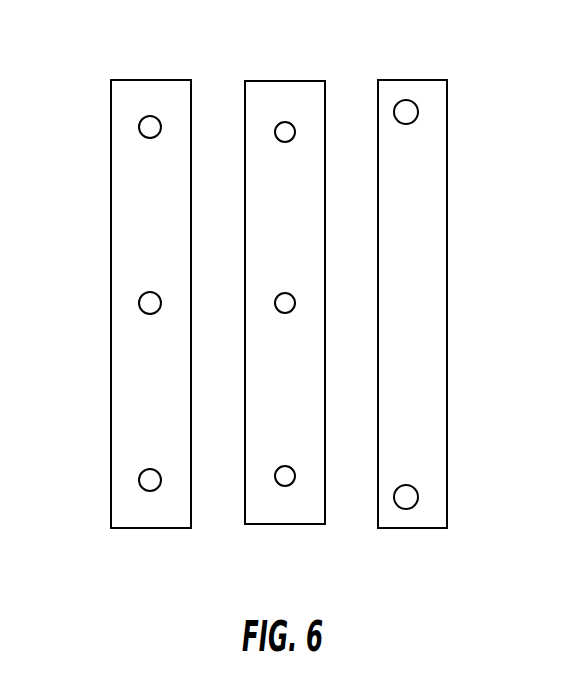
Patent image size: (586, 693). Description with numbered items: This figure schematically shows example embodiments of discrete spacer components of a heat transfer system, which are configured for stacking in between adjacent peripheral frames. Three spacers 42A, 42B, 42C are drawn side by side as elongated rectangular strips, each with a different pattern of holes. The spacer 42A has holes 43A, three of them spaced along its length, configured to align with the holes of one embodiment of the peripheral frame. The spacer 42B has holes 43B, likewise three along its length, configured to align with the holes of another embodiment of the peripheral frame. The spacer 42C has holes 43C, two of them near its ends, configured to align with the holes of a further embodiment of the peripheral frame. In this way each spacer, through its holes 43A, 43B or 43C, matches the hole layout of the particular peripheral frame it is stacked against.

The spacer 42A is at (147, 80).
The spacer 42B is at (273, 81).
The spacer 42C is at (412, 80).
The holes 43A is at (150, 127).
The holes 43B is at (285, 476).
The holes 43C is at (406, 112).